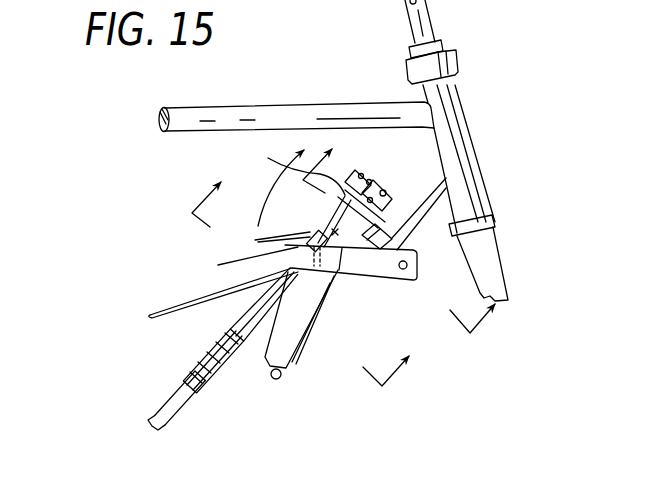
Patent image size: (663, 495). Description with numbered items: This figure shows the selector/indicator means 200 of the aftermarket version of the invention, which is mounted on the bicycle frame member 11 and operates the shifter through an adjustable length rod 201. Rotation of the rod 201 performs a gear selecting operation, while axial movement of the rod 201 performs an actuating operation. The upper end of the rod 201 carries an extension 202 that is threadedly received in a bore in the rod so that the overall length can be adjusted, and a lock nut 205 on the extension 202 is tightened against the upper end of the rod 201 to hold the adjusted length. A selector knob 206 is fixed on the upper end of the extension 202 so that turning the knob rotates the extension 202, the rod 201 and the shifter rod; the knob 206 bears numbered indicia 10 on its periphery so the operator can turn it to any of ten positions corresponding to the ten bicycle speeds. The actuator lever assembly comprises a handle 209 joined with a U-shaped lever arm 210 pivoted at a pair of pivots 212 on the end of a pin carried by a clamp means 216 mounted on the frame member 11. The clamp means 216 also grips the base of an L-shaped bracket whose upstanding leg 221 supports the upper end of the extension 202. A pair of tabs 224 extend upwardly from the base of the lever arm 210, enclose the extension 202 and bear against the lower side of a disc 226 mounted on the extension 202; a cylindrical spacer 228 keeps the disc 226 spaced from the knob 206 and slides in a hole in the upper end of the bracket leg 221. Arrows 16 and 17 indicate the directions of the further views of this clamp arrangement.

The numbered indicia 10 is at (331, 92).
The frame member 11 is at (287, 372).
The FIG. 16 view direction 16 is at (282, 304).
The FIG. 17 view direction 17 is at (376, 263).
The selector/indicator means 200 is at (427, 231).
The adjustable length rod 201 is at (167, 408).
The extension 202 is at (244, 330).
The lock nut 205 is at (217, 343).
The selector knob 206 is at (360, 172).
The handle 209 is at (166, 307).
The U-shaped lever arm 210 is at (362, 262).
The pivots 212 is at (408, 266).
The clamp means 216 is at (469, 199).
The upstanding leg 221 is at (286, 165).
The tabs 224 is at (218, 265).
The disc 226 is at (257, 241).
The cylindrical spacer 228 is at (339, 268).